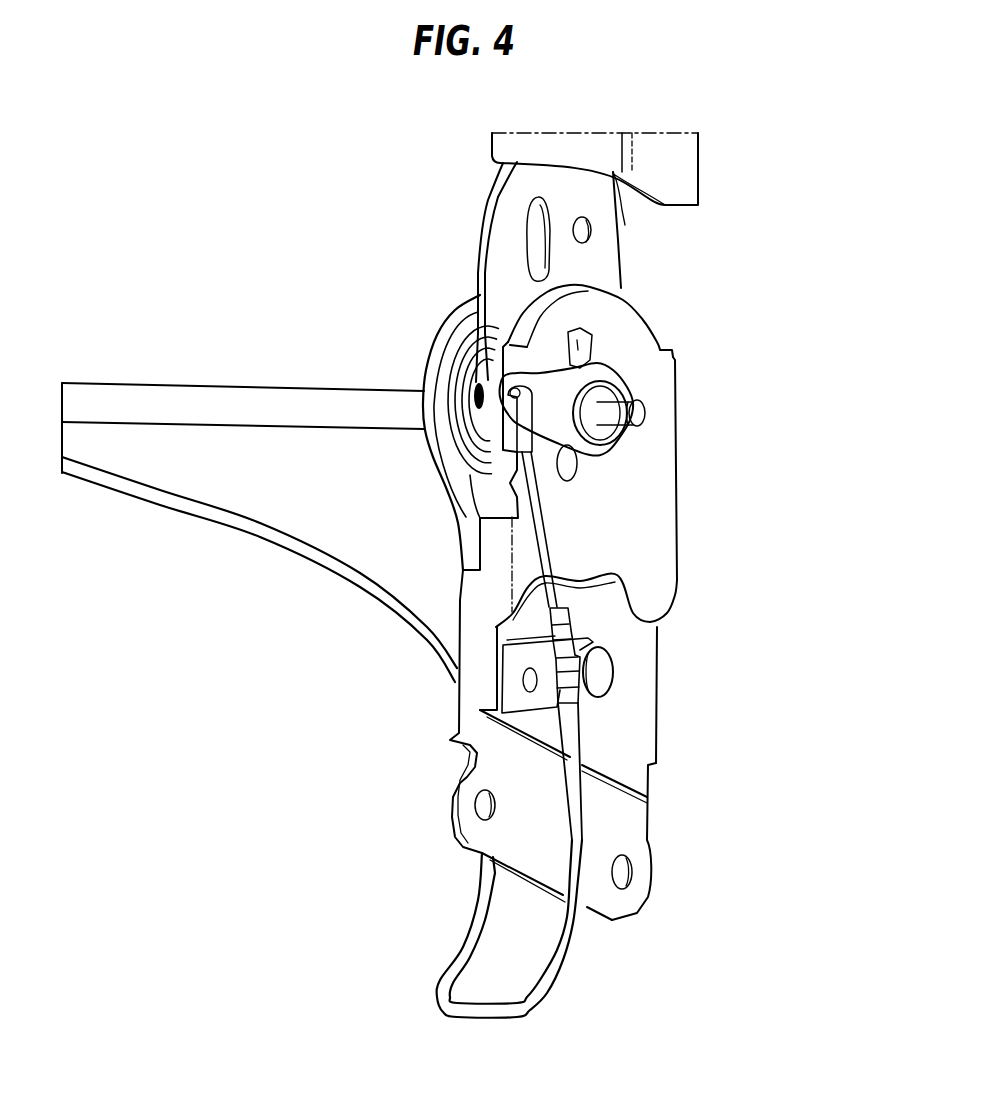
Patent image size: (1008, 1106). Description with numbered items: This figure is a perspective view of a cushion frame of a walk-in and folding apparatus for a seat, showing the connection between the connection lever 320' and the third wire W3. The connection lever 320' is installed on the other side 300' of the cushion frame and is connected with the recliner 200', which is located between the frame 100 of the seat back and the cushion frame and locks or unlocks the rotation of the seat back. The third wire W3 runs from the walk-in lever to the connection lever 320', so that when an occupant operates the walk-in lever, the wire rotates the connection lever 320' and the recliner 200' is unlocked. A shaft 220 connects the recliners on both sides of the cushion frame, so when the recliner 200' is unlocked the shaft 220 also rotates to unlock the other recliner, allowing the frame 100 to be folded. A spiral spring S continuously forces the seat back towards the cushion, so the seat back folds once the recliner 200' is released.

The frame 100 is at (603, 222).
The recliner 200' is at (674, 304).
The connection lever 320' is at (672, 411).
The side of the cushion frame 300' is at (671, 687).
The shaft 220 is at (258, 400).
The third wire W3 is at (172, 495).
The spiral spring S is at (443, 468).